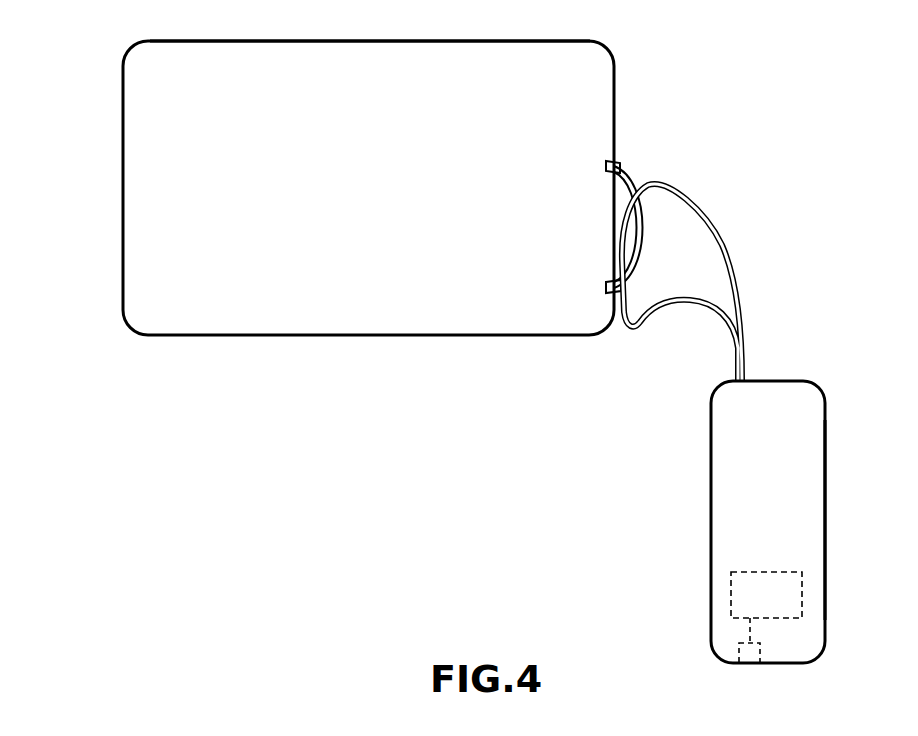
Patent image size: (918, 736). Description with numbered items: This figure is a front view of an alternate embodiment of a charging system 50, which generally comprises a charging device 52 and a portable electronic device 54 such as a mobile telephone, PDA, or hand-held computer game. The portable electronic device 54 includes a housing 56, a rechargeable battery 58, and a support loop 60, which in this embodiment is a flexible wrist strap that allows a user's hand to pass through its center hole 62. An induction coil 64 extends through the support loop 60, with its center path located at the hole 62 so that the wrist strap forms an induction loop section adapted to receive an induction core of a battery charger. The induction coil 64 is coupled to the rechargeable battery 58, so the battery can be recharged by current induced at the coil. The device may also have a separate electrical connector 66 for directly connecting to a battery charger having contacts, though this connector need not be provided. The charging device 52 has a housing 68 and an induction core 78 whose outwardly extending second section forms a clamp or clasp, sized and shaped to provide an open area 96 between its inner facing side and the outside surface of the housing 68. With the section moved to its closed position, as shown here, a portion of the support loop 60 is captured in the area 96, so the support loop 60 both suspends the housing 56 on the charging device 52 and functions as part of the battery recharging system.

The charging system 50 is at (117, 38).
The charging device 52 is at (116, 240).
The housing 68 is at (327, 40).
The induction core 78 is at (632, 172).
The open area 96 is at (620, 195).
The support loop 60 is at (723, 237).
The center hole 62 is at (688, 222).
The induction coil 64 is at (736, 297).
The portable electronic device 54 is at (828, 380).
The housing 56 is at (826, 489).
The rechargeable battery 58 is at (803, 591).
The electrical connector 66 is at (758, 655).